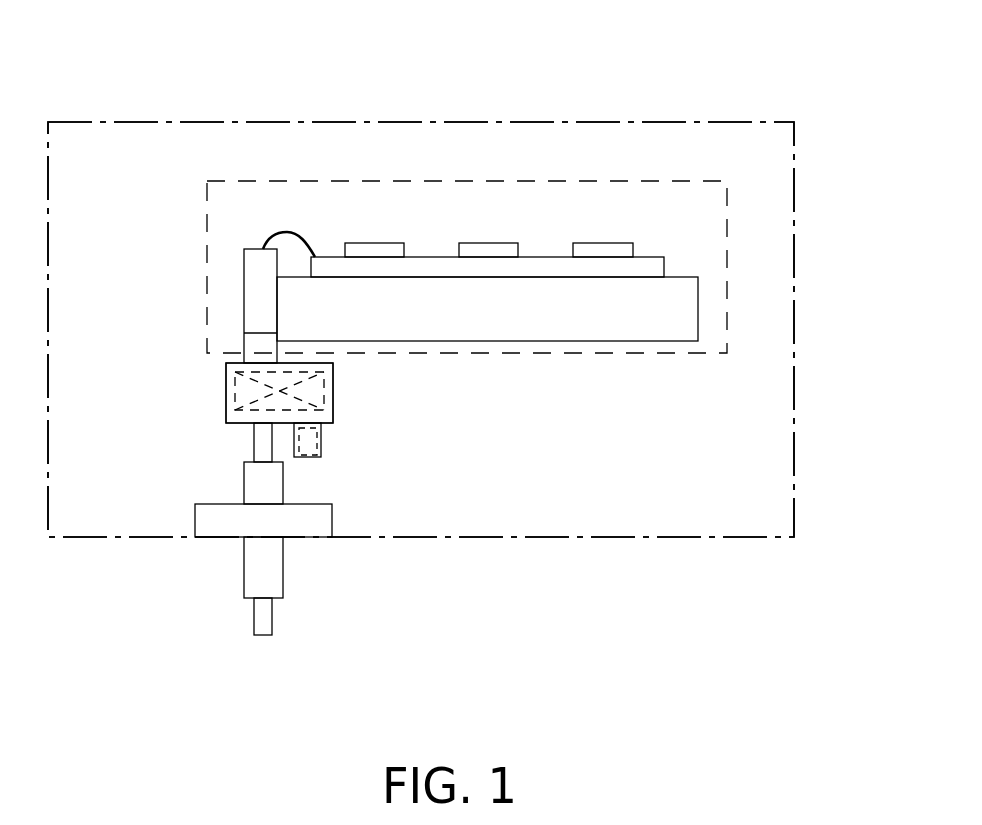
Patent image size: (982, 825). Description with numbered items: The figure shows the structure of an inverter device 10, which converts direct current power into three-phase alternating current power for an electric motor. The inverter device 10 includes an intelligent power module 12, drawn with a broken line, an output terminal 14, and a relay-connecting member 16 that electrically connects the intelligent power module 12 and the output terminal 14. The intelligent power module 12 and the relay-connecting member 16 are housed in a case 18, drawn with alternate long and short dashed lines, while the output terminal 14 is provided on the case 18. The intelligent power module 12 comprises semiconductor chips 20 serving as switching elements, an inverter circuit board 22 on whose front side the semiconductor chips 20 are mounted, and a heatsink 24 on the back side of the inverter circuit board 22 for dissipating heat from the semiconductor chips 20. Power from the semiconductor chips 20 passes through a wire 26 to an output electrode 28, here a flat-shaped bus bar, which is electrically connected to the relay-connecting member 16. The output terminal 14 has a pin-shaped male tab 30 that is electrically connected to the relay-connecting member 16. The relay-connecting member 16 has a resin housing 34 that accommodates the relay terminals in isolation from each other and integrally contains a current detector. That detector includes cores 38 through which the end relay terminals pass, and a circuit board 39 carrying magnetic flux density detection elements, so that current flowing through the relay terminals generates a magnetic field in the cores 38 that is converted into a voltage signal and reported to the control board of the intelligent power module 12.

The inverter device 10 is at (733, 606).
The intelligent power module 12 is at (733, 232).
The output terminal 14 is at (308, 545).
The relay-connecting member 16 is at (340, 390).
The case 18 is at (112, 538).
The semiconductor chips 20 is at (375, 242).
The inverter circuit board 22 is at (664, 263).
The heatsink 24 is at (653, 327).
The wire 26 is at (287, 232).
The output electrode 28 is at (244, 291).
The male tab 30 is at (254, 444).
The housing 34 is at (226, 375).
The cores 38 is at (235, 397).
The circuit board 39 is at (321, 440).